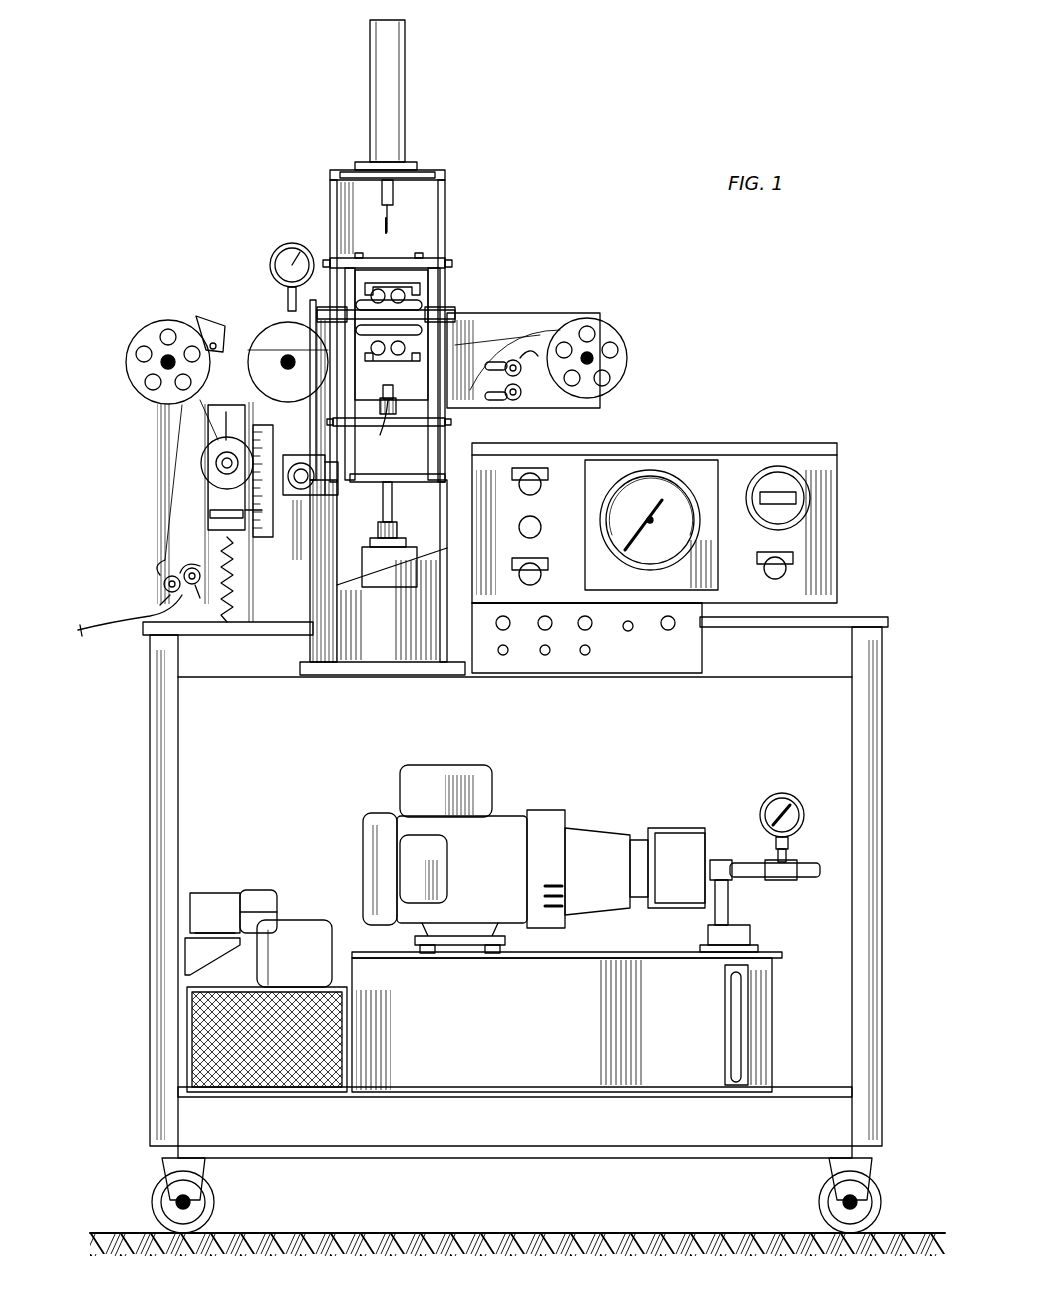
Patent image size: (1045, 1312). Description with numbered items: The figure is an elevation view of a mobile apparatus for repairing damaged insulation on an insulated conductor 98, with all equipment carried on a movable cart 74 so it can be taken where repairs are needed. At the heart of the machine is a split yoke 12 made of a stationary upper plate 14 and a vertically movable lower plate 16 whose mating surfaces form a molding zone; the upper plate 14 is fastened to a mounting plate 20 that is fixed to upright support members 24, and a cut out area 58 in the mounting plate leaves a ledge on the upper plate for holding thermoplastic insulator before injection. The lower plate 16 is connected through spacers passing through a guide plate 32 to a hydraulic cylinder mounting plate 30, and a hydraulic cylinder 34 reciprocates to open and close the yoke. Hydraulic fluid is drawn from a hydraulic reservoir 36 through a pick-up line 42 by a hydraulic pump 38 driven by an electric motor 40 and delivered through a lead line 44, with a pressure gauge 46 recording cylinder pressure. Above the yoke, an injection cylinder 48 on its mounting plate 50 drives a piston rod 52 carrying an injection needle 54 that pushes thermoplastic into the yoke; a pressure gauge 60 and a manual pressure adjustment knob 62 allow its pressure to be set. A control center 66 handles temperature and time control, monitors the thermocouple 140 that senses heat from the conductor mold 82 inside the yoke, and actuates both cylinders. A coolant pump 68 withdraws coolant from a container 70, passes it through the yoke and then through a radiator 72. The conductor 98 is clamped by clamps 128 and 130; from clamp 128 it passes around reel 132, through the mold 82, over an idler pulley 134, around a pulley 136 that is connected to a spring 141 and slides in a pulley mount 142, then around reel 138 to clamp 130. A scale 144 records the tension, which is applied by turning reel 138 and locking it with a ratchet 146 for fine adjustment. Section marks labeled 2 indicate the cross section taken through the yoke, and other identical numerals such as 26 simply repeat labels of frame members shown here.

The section line 2 is at (244, 250).
The split yoke 12 is at (450, 300).
The upper plate 14 is at (347, 292).
The lower plate 16 is at (462, 330).
The mounting plate 20 is at (437, 258).
The upright support members 24 is at (386, 236).
The cross member 26 is at (380, 196).
The hydraulic cylinder mounting plate 30 is at (372, 484).
The guide plate 32 is at (338, 421).
The hydraulic cylinder 34 is at (378, 560).
The hydraulic reservoir 36 is at (690, 1030).
The hydraulic pump 38 is at (670, 840).
The electric motor 40 is at (510, 815).
The pick-up line 42 is at (725, 903).
The lead line 44 is at (820, 870).
The pressure gauge 46 is at (780, 793).
The injection cylinder 48 is at (395, 55).
The mounting plate 50 is at (425, 170).
The piston rod 52 is at (345, 174).
The injection needle 54 is at (388, 212).
The cut out area 58 is at (425, 290).
The pressure gauge 60 is at (275, 262).
The manual pressure adjustment knob 62 is at (302, 490).
The control center 66 is at (740, 443).
The coolant pump 68 is at (217, 895).
The container 70 is at (300, 928).
The radiator 72 is at (210, 1040).
The movable cart 74 is at (162, 796).
The conductor insert or mold 82 is at (462, 312).
The insulated conductor 98 is at (105, 634).
The clamp 128 is at (525, 395).
The clamp 130 is at (165, 590).
The reel 132 is at (620, 345).
The idler pulley 134 is at (272, 336).
The pulley 136 is at (207, 465).
The reel 138 is at (150, 332).
The thermocouple 140 is at (400, 385).
The spring 141 is at (235, 640).
The pulley mount 142 is at (215, 416).
The scale 144 is at (265, 495).
The ratchet 146 is at (196, 318).